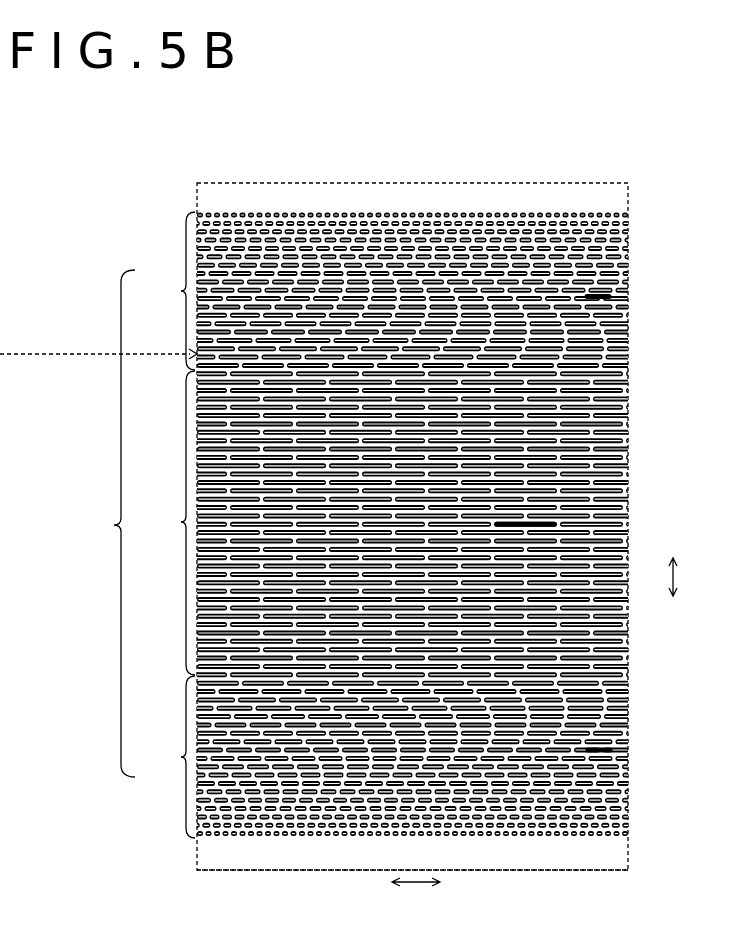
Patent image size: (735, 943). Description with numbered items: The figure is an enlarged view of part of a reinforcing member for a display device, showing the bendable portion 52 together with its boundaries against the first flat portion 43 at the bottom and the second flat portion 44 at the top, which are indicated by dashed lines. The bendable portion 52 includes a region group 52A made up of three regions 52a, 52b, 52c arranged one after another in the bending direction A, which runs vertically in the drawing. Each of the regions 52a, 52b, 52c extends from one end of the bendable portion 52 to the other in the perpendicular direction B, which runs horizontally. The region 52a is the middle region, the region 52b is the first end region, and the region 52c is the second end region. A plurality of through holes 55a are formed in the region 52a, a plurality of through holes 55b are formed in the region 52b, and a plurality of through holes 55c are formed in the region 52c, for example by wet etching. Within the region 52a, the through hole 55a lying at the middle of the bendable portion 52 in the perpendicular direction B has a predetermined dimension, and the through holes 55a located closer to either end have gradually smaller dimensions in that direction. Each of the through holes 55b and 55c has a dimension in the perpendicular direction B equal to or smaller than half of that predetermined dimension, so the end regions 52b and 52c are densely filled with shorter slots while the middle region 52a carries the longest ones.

The first flat portion 43 is at (612, 852).
The second flat portion 44 is at (618, 206).
The bendable portion 52 is at (419, 525).
The region group 52A is at (90, 523).
The region 52a is at (408, 523).
The region 52b is at (409, 757).
The region 52c is at (407, 291).
The through holes 55a is at (530, 527).
The through holes 55b is at (560, 750).
The through holes 55c is at (560, 296).
The bending direction A is at (674, 577).
The perpendicular direction B is at (416, 883).